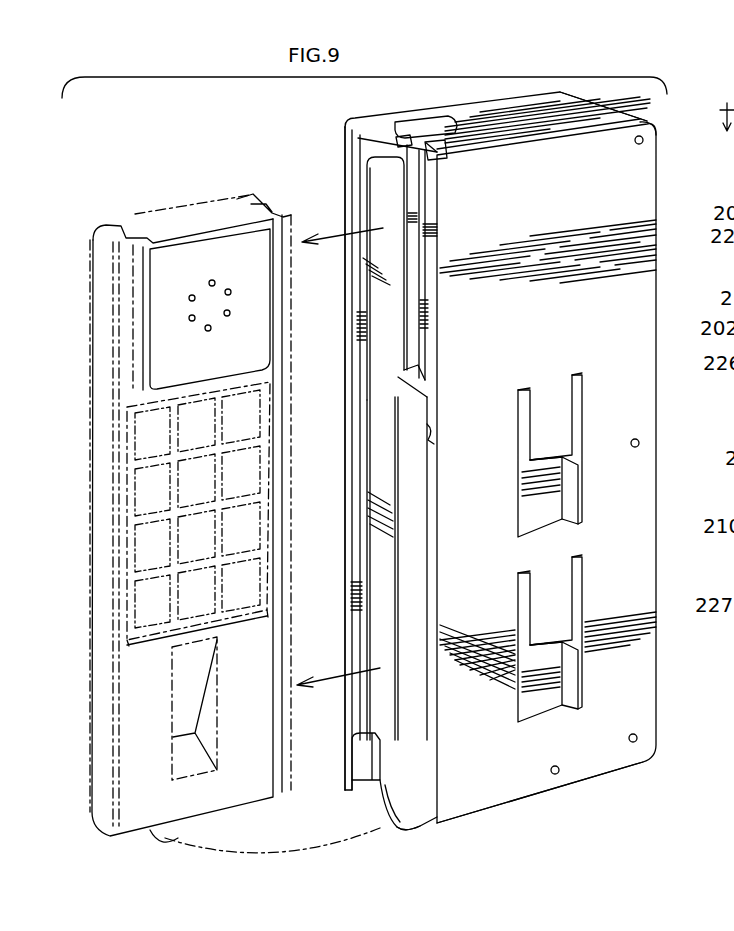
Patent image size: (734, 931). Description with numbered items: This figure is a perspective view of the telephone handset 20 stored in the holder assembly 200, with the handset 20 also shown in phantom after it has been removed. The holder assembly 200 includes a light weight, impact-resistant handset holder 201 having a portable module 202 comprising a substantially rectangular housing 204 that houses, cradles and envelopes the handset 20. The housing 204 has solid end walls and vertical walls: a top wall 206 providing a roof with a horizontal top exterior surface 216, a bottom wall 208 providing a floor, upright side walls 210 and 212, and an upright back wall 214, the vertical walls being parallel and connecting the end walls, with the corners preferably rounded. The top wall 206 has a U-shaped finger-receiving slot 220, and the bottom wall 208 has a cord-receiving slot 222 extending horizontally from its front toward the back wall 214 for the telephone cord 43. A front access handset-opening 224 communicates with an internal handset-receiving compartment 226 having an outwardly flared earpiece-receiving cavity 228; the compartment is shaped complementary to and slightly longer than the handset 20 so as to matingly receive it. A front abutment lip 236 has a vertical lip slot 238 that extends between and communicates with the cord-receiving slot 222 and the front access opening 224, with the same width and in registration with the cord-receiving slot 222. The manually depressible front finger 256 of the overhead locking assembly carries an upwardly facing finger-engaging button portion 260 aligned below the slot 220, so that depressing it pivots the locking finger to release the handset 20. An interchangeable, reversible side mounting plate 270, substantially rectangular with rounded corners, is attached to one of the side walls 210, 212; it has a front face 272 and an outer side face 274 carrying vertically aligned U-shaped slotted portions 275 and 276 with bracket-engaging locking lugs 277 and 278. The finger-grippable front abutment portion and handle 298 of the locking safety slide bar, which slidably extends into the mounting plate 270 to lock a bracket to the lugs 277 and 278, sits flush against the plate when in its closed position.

The telephone handset 20 is at (152, 223).
The telephone cord 43 is at (405, 827).
The holder assembly 200 is at (344, 110).
The handset holder 201 is at (345, 152).
The portable module 202 is at (355, 280).
The housing 204 is at (602, 100).
The top wall 206 is at (513, 103).
The bottom wall 208 is at (358, 775).
The upright side wall 210 is at (347, 355).
The upright side wall 212 is at (538, 132).
The upright back wall 214 is at (653, 188).
The horizontal top exterior surface 216 is at (618, 115).
The U-shaped finger-receiving slot 220 is at (415, 127).
The cord-receiving slot 222 is at (380, 783).
The front access handset-opening 224 is at (362, 155).
The internal telephone handset-receiving compartment 226 is at (360, 390).
The outwardly flared earpiece-receiving cavity 228 is at (423, 315).
The front abutment lip 236 is at (357, 758).
The vertical lip slot 238 is at (352, 750).
The front finger 256 is at (405, 137).
The finger-engaging button portion 260 is at (440, 152).
The side mounting plate 270 is at (637, 268).
The front face 272 is at (530, 790).
The outer side face 274 is at (437, 345).
The U-shaped slotted portion 275 is at (582, 422).
The U-shaped slotted portion 276 is at (582, 610).
The bracket-engaging locking lug 277 is at (550, 460).
The bracket-engaging locking lug 278 is at (547, 642).
The front abutment portion and handle 298 is at (427, 433).